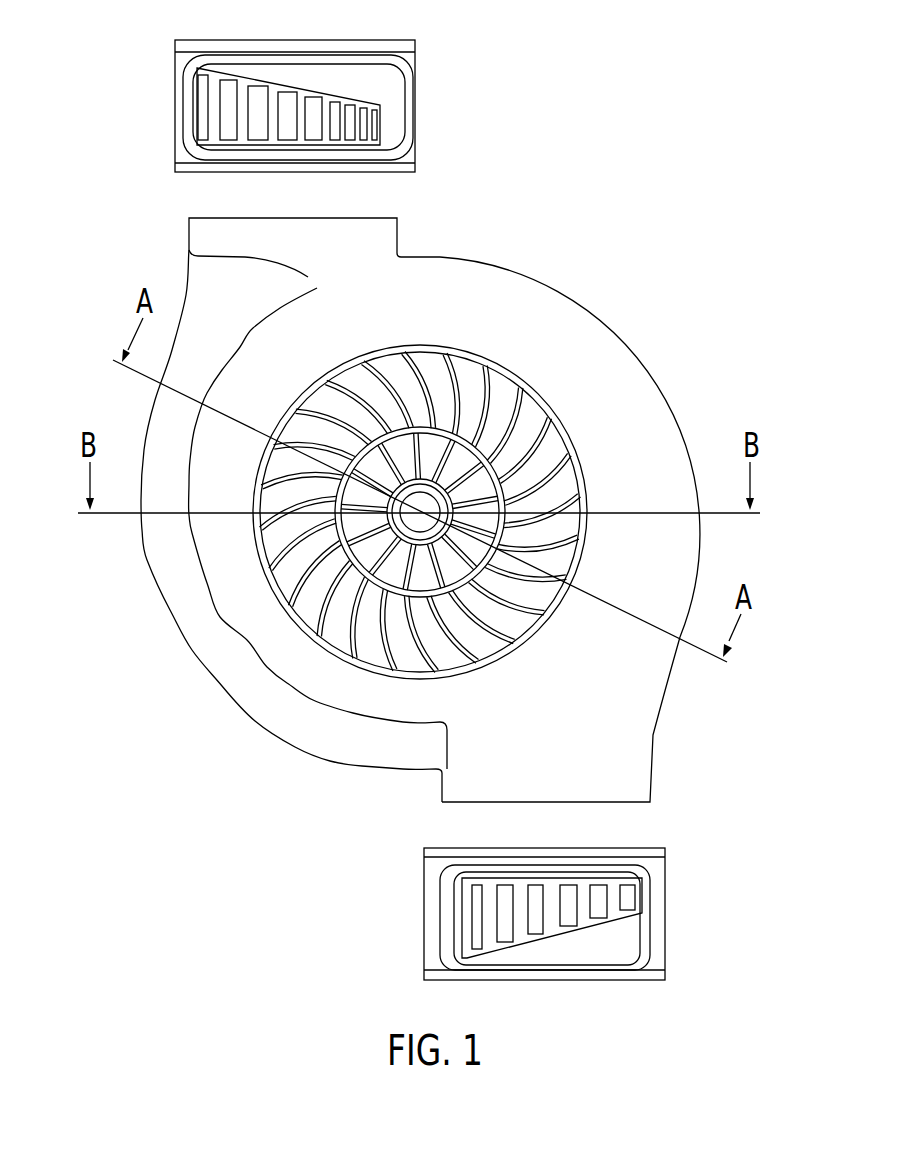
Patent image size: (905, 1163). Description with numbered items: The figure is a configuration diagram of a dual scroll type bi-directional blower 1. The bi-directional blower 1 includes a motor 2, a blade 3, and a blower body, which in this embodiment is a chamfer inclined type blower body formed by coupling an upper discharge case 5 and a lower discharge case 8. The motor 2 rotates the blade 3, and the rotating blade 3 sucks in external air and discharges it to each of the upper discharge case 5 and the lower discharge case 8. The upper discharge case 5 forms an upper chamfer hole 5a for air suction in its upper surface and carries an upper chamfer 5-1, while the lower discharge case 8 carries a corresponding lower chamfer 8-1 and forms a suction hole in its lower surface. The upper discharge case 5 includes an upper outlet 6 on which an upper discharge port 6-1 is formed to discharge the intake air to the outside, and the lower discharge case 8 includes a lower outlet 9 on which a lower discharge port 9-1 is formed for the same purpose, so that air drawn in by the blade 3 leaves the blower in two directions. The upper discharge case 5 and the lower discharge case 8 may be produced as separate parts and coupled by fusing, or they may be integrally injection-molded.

The bi-directional blower 1 is at (590, 170).
The motor 2 is at (447, 513).
The blade 3 is at (448, 397).
The upper discharge case 5 is at (435, 510).
The upper chamfer 5-1 is at (172, 562).
The upper chamfer hole 5a is at (293, 600).
The upper outlet 6 is at (383, 232).
The upper discharge port 6-1 is at (190, 117).
The lower discharge case 8 is at (350, 762).
The lower chamfer 8-1 is at (698, 553).
The lower outlet 9 is at (622, 762).
The lower discharge port 9-1 is at (443, 918).